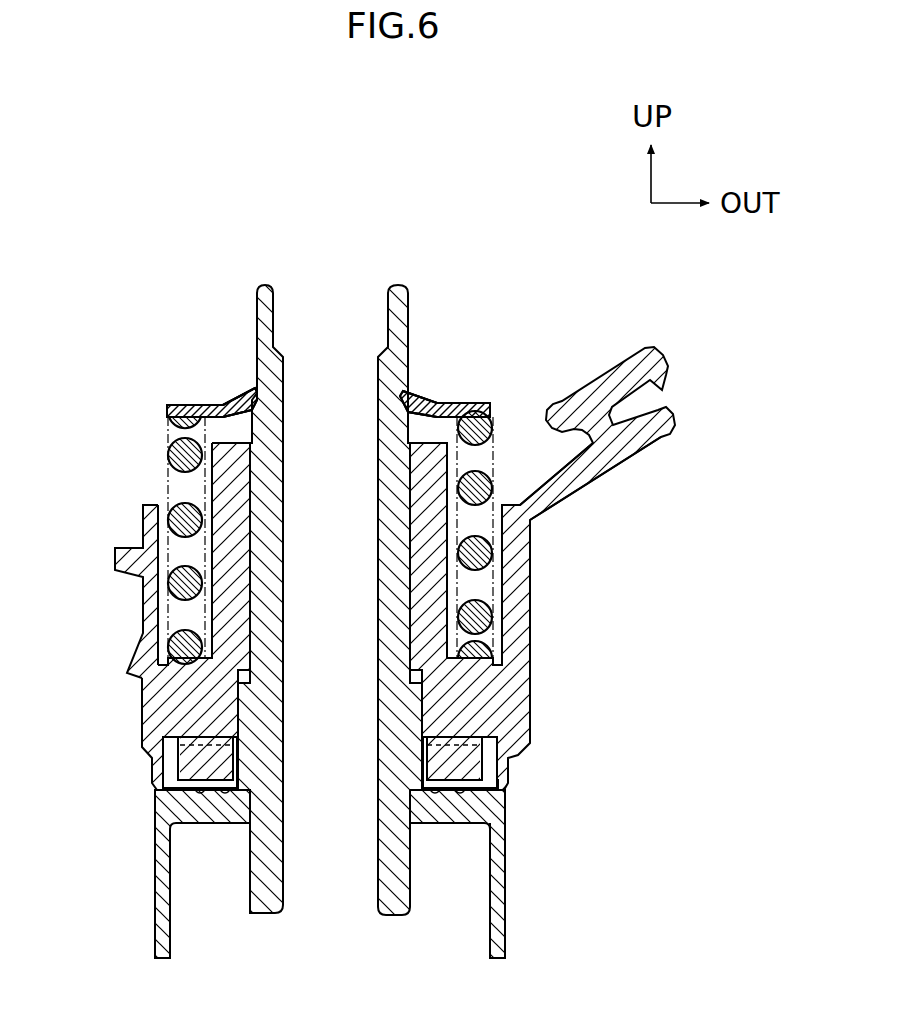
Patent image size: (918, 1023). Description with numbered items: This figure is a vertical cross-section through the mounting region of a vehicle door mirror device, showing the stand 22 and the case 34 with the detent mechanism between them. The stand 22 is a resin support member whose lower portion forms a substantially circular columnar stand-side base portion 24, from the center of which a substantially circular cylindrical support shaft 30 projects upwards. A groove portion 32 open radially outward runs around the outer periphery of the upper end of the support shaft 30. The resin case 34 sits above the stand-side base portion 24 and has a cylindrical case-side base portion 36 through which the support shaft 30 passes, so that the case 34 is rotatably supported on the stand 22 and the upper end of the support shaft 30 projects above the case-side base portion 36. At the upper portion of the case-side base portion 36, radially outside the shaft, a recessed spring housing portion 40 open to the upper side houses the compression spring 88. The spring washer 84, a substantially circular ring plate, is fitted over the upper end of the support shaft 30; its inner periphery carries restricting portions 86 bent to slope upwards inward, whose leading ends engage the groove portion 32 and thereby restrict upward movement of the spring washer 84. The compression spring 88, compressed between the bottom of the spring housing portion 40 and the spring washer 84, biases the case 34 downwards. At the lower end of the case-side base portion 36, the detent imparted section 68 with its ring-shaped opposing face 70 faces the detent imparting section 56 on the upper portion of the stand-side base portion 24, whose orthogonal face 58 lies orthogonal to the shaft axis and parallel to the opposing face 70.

The stand 22 is at (514, 858).
The stand-side base portion 24 is at (507, 808).
The support shaft 30 is at (408, 300).
The groove portion 32 is at (437, 403).
The case 34 is at (538, 572).
The case-side base portion 36 is at (530, 690).
The spring housing portion 40 is at (158, 603).
The detent imparting section 56 is at (228, 790).
The orthogonal face 58 is at (200, 790).
The detent imparted section 68 is at (503, 770).
The opposing face 70 is at (178, 788).
The spring washer 84 is at (178, 403).
The restricting portion 86 is at (247, 388).
The compression spring 88 is at (168, 452).